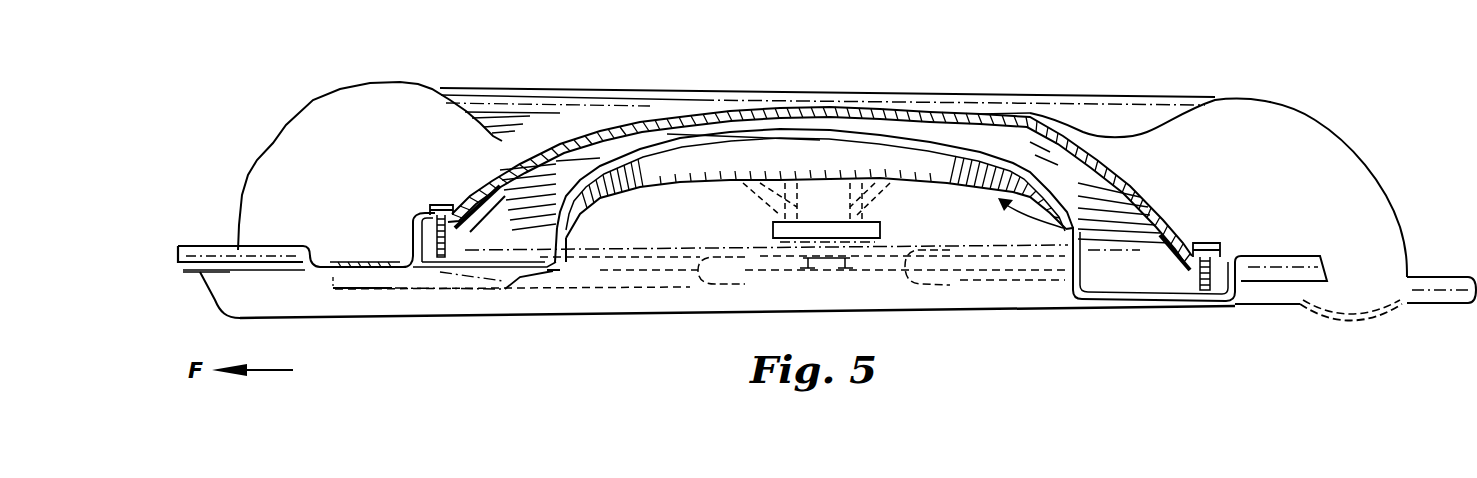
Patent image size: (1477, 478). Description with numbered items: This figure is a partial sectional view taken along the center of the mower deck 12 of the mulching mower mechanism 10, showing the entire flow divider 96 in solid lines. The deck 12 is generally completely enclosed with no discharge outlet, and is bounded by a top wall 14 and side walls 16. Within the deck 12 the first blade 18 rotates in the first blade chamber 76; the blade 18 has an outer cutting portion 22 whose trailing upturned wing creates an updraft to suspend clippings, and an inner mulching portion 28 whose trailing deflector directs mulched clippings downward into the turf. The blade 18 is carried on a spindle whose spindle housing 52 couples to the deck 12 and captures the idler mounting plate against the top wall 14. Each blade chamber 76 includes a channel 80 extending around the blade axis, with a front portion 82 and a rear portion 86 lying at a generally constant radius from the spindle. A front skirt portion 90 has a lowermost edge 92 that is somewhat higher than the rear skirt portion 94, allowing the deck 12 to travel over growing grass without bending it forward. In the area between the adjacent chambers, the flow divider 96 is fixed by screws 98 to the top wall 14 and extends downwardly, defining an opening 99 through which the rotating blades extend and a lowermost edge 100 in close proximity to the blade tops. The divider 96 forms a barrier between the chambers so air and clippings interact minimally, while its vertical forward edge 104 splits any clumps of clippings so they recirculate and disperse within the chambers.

The mulching mower mechanism 10 is at (1118, 72).
The mower deck 12 is at (603, 122).
The top wall 14 is at (883, 110).
The side walls 16 is at (256, 165).
The first blade 18 is at (693, 290).
The outer cutting portion 22 is at (387, 290).
The inner mulching portion 28 is at (631, 277).
The spindle housing 52 is at (782, 196).
The first blade chamber 76 is at (352, 320).
The channel 80 is at (363, 147).
The front portion of the channel 82 is at (338, 191).
The rear portion of the channel 86 is at (1310, 224).
The front skirt portion 90 is at (200, 273).
The lowermost edge 92 is at (270, 273).
The rear skirt portion 94 is at (1407, 292).
The flow divider 96 is at (815, 164).
The screws 98 is at (447, 203).
The opening 99 is at (1108, 197).
The lowermost edge 100 is at (928, 185).
The forward edge 104 is at (558, 229).